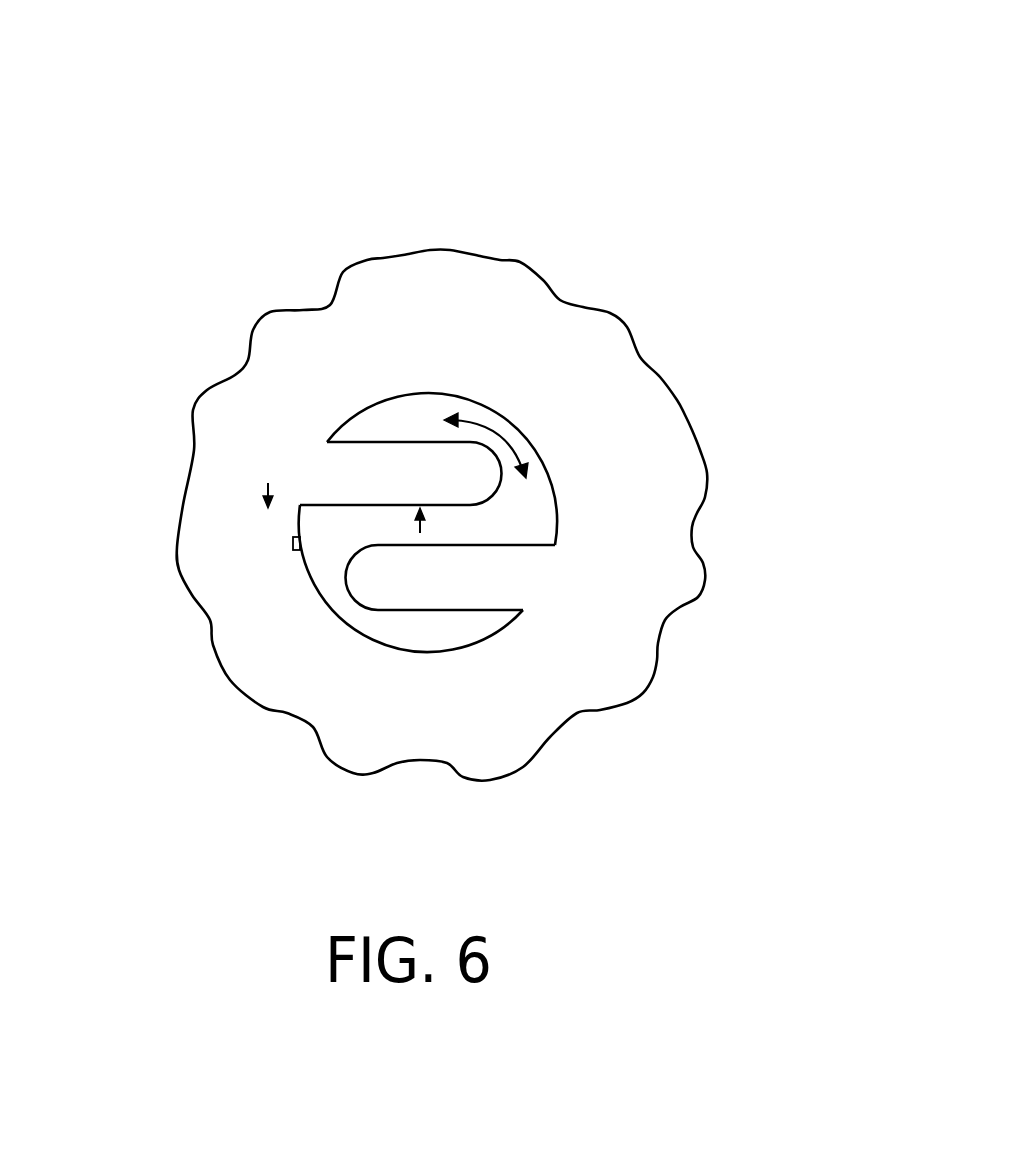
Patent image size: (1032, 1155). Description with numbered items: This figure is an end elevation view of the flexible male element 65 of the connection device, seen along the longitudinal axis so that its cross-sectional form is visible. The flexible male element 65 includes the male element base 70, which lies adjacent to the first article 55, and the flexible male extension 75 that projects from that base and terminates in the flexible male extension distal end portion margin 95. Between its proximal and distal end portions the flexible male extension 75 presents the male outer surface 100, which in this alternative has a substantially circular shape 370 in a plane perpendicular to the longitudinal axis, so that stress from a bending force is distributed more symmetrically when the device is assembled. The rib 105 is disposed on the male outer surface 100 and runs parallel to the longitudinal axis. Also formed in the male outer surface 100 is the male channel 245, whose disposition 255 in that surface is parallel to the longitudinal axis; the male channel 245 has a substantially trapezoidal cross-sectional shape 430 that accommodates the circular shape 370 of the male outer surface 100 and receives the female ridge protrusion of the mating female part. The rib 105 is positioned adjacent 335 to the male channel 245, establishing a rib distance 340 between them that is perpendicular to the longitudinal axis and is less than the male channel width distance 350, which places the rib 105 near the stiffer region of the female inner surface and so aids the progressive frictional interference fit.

The flexible male element 65 is at (641, 84).
The male element base 70 is at (448, 307).
The first article 55 is at (525, 332).
The male channel width distance 350 is at (391, 436).
The substantially circular shape 370 is at (481, 423).
The male outer surface 100 is at (510, 420).
The flexible male extension 75 is at (533, 445).
The flexible male extension distal end portion margin 95 is at (524, 497).
The disposed 255 is at (557, 544).
The male channel 245 is at (487, 609).
The substantially trapezoidal cross-sectional shape 430 is at (403, 472).
The rib 105 is at (291, 542).
The adjacent 335 is at (273, 673).
The rib distance 340 is at (278, 558).